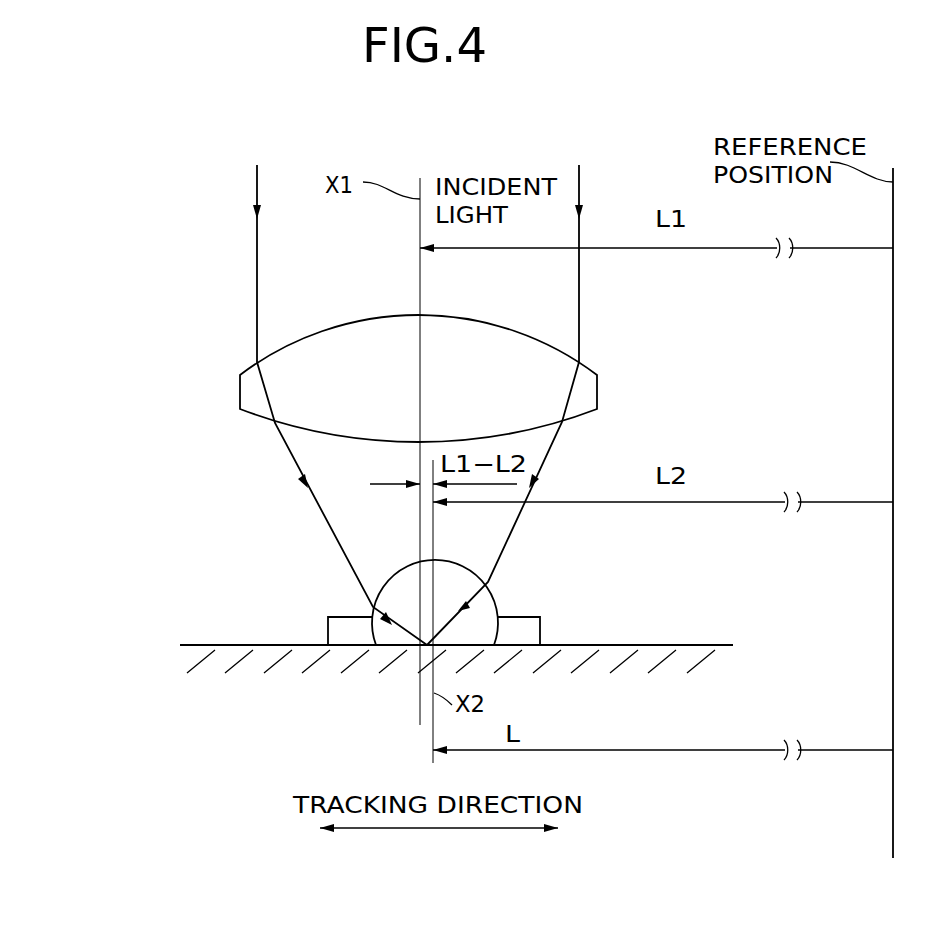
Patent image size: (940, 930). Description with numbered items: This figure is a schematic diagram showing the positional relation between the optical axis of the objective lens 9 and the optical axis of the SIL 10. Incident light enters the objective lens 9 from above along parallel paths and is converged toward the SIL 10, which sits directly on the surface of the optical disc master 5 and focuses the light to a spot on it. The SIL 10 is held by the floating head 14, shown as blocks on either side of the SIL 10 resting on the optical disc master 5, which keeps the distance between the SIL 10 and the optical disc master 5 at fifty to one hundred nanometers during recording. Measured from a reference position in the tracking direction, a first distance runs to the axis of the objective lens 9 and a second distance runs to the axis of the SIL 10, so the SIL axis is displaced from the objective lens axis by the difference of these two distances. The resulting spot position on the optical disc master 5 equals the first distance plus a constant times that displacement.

The objective lens 9 is at (588, 390).
The SIL 10 is at (487, 607).
The floating head 14 is at (532, 632).
The optical disc master 5 is at (573, 665).